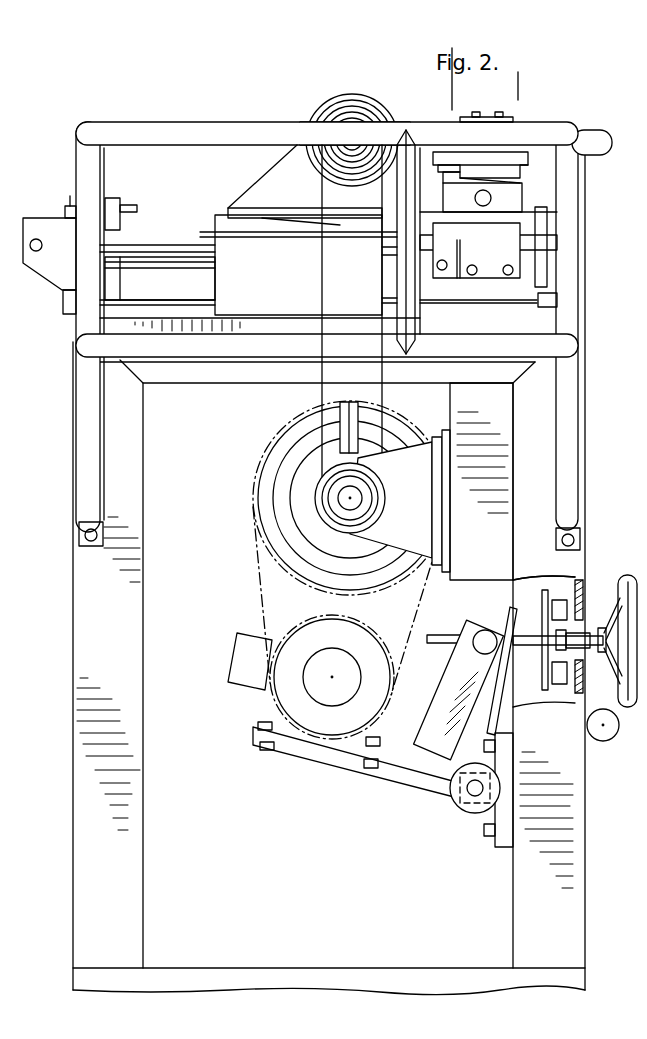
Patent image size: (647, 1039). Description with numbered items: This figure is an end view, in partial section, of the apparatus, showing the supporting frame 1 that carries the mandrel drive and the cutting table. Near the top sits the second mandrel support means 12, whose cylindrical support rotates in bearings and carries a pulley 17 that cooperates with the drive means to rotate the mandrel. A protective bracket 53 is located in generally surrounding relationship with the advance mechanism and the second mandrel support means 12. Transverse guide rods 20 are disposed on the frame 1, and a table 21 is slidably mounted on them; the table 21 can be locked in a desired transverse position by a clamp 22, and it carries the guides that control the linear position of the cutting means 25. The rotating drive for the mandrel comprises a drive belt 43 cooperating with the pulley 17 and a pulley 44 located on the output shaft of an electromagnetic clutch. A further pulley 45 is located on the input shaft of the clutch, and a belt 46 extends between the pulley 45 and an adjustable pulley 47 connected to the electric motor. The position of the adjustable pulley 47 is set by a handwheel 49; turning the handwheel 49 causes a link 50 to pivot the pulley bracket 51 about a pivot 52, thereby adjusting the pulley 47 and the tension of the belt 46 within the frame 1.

The supporting frame 1 is at (128, 908).
The second mandrel support means 12 is at (342, 96).
The pulley 17 is at (340, 112).
The guide rods 20 is at (547, 242).
The table 21 is at (497, 215).
The clamp 22 is at (440, 265).
The cutting means 25 is at (532, 120).
The drive belt 43 is at (322, 285).
The pulley 44 is at (378, 518).
The further pulley 45 is at (262, 462).
The belt 46 is at (262, 588).
The adjustable pulley 47 is at (270, 700).
The handwheel 49 is at (628, 710).
The link 50 is at (445, 700).
The pulley bracket 51 is at (400, 780).
The pivot 52 is at (470, 792).
The protective bracket 53 is at (163, 130).